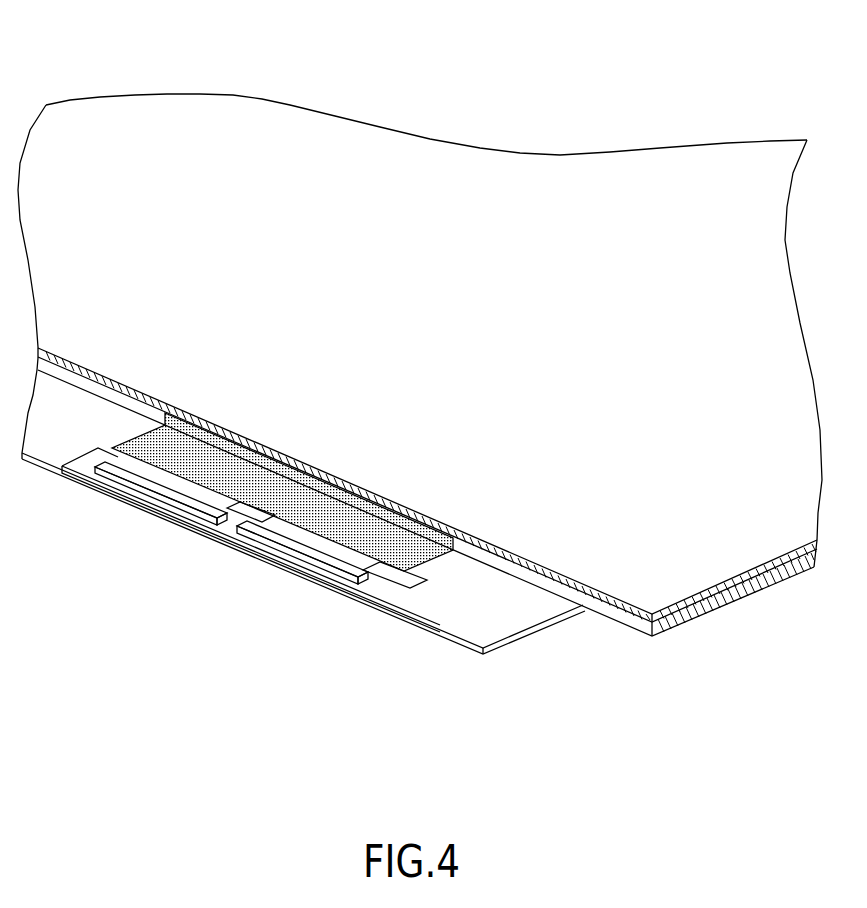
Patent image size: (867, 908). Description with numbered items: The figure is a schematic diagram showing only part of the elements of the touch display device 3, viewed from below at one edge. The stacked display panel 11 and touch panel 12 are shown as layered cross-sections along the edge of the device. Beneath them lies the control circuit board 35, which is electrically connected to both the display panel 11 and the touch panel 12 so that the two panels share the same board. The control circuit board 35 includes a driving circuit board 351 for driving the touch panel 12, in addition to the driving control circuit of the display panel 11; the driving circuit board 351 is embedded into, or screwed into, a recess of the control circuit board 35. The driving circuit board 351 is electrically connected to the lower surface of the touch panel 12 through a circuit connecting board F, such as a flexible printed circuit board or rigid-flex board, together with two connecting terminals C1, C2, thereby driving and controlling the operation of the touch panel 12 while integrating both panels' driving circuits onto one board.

The touch display device 3 is at (504, 90).
The display panel 11 is at (640, 620).
The touch panel 12 is at (672, 588).
The control circuit board 35 is at (472, 621).
The driving circuit board 351 is at (370, 592).
The circuit connecting board F is at (303, 517).
The connecting terminal C1 is at (190, 505).
The connecting terminal C2 is at (338, 564).